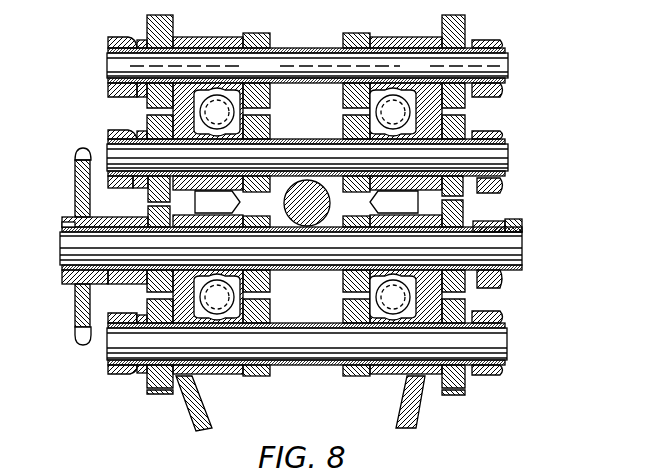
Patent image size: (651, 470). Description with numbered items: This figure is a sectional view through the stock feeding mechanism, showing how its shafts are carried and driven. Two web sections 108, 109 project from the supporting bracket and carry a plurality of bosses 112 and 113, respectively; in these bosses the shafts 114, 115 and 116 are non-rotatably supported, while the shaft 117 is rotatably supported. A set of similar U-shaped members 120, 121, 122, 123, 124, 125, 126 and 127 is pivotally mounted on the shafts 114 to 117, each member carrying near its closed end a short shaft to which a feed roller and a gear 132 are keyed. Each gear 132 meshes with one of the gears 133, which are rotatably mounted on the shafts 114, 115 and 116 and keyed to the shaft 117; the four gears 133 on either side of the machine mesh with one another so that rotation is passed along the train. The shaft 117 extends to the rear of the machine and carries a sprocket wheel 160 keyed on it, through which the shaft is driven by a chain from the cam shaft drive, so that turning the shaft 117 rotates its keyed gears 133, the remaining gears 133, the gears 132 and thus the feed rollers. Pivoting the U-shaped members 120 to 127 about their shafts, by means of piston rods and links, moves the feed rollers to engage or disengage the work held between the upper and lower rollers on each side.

The web section 108 is at (394, 202).
The web section 109 is at (217, 202).
The boss 112 is at (414, 28).
The boss 113 is at (222, 28).
The shaft 114 is at (322, 30).
The shaft 115 is at (318, 136).
The shaft 116 is at (293, 350).
The shaft 117 is at (291, 257).
The U-shaped member 120 is at (502, 46).
The U-shaped member 121 is at (502, 138).
The U-shaped member 122 is at (495, 224).
The U-shaped member 123 is at (497, 325).
The U-shaped member 124 is at (108, 88).
The U-shaped member 125 is at (108, 136).
The U-shaped member 126 is at (128, 205).
The U-shaped member 127 is at (107, 372).
The gear 132 is at (463, 200).
The gear 133 is at (148, 22).
The sprocket wheel 160 is at (80, 306).